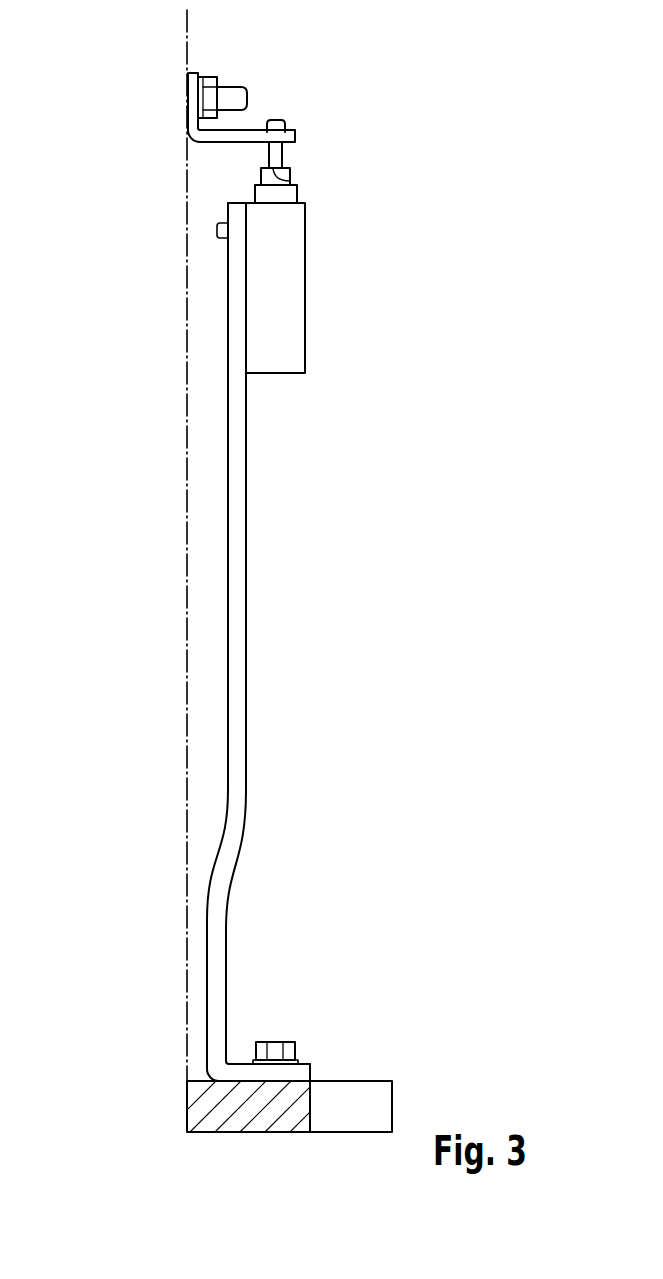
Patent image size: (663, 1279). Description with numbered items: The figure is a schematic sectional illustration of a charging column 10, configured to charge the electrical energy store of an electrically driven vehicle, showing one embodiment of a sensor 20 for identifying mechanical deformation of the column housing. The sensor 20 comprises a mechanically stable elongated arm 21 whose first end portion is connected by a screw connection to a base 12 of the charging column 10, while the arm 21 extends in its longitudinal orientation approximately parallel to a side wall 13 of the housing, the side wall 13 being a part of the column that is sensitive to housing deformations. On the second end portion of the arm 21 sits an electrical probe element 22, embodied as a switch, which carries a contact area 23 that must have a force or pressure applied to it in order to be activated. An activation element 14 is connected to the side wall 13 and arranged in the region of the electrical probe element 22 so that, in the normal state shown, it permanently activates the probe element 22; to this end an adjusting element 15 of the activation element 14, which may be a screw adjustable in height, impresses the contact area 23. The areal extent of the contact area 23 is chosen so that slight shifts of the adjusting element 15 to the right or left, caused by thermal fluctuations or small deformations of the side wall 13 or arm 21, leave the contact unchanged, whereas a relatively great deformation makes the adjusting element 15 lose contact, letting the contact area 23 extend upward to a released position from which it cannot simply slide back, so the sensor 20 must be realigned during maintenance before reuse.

The charging column 10 is at (113, 80).
The base 12 is at (197, 1105).
The side wall 13 is at (188, 730).
The activation element 14 is at (253, 135).
The adjusting element 15 is at (277, 158).
The sensor 20 is at (370, 579).
The arm 21 is at (247, 482).
The electrical probe element 22 is at (295, 285).
The contact area 23 is at (291, 178).